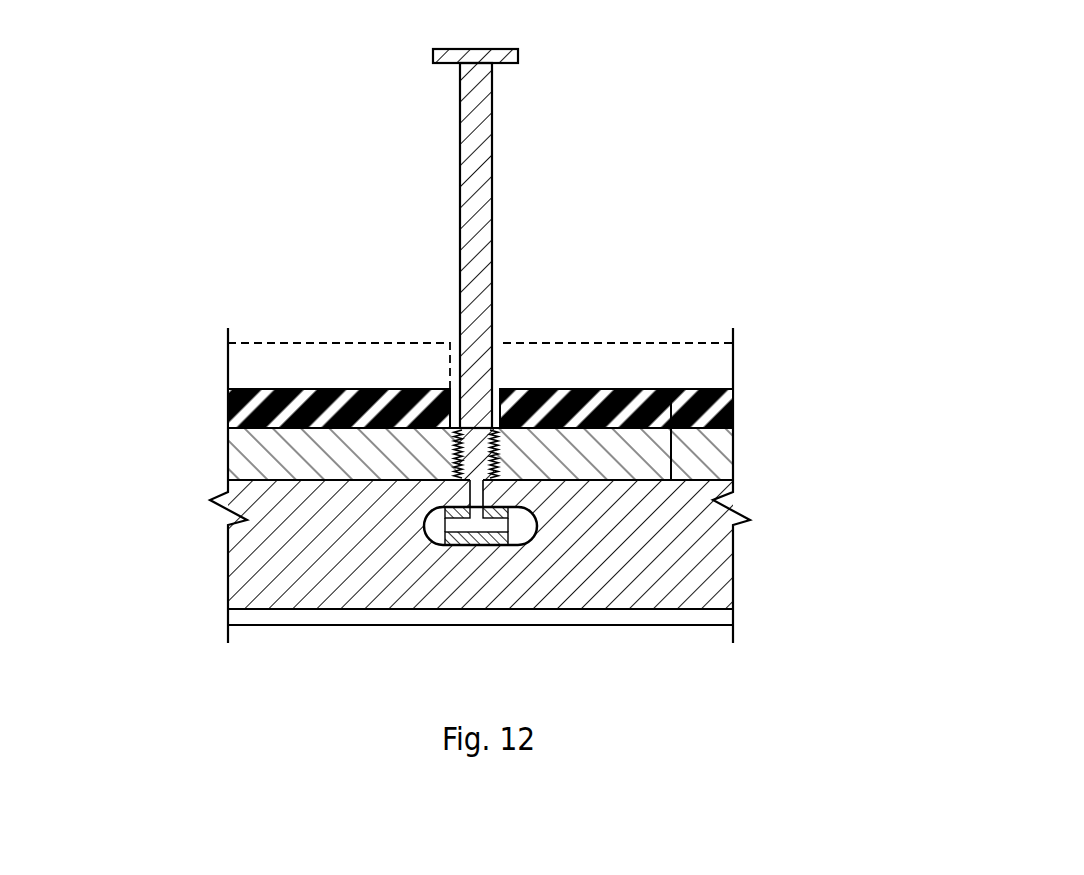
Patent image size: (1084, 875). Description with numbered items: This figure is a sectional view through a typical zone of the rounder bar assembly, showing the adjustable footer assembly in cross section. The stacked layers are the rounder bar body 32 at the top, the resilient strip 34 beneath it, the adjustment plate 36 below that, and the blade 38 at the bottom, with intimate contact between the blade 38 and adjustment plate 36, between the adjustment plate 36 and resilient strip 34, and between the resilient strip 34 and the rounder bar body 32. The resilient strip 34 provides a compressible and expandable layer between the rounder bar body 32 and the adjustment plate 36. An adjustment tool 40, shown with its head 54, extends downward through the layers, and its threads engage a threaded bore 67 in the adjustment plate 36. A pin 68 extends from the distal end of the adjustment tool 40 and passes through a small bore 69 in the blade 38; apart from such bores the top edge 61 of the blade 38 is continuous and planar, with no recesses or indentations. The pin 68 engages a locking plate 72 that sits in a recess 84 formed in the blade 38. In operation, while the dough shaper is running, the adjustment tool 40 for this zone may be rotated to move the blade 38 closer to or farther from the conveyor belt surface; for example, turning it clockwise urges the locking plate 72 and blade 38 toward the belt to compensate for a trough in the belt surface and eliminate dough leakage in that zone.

The rounder bar body 32 is at (605, 376).
The resilient strip 34 is at (722, 412).
The adjustment plate 36 is at (710, 456).
The blade 38 is at (247, 553).
The adjustment tool 40 is at (494, 175).
The post head 54 is at (518, 53).
The top edge 61 is at (671, 389).
The threaded bore 67 is at (457, 447).
The pin 68 is at (478, 497).
The bore 69 is at (500, 497).
The locking plate 72 is at (477, 545).
The recess 84 is at (522, 540).